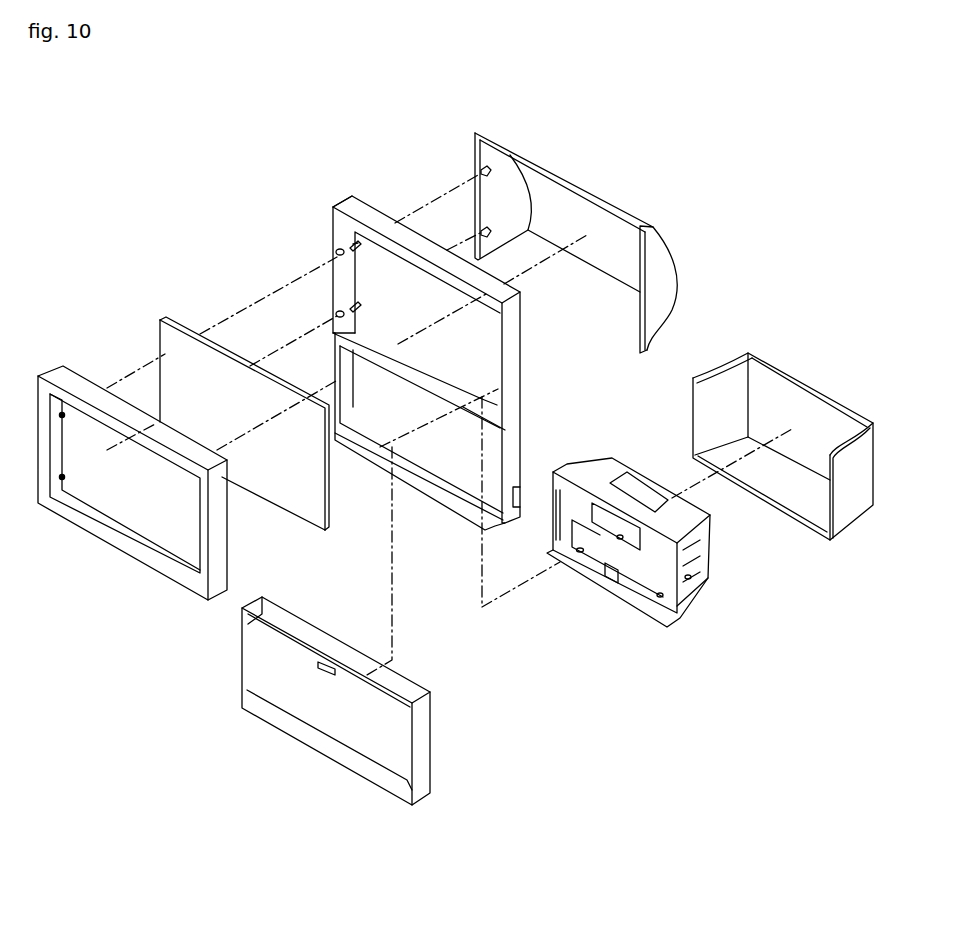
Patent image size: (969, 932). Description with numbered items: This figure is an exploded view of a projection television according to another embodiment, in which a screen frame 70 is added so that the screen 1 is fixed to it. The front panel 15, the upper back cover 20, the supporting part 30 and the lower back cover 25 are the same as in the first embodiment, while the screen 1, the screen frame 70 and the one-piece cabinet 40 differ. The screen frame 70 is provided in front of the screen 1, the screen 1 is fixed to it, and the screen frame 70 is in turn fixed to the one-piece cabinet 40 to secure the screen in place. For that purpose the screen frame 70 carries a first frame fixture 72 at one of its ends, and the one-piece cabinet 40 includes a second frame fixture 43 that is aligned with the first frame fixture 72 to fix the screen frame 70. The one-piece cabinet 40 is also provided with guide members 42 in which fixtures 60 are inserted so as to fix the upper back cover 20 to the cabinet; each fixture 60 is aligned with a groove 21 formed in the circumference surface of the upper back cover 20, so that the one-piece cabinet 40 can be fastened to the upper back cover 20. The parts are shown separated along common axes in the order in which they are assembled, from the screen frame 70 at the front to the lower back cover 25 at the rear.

The screen 1 is at (201, 340).
The front panel 15 is at (425, 755).
The upper back cover 20 is at (658, 257).
The groove 21 is at (480, 171).
The lower back cover 25 is at (855, 500).
The supporting part 30 is at (696, 523).
The one-piece cabinet 40 is at (360, 208).
The guide member 42 is at (352, 243).
The second frame fixture 43 is at (336, 251).
The fixture 60 is at (358, 245).
The screen frame 70 is at (64, 378).
The first frame fixture 72 is at (64, 417).